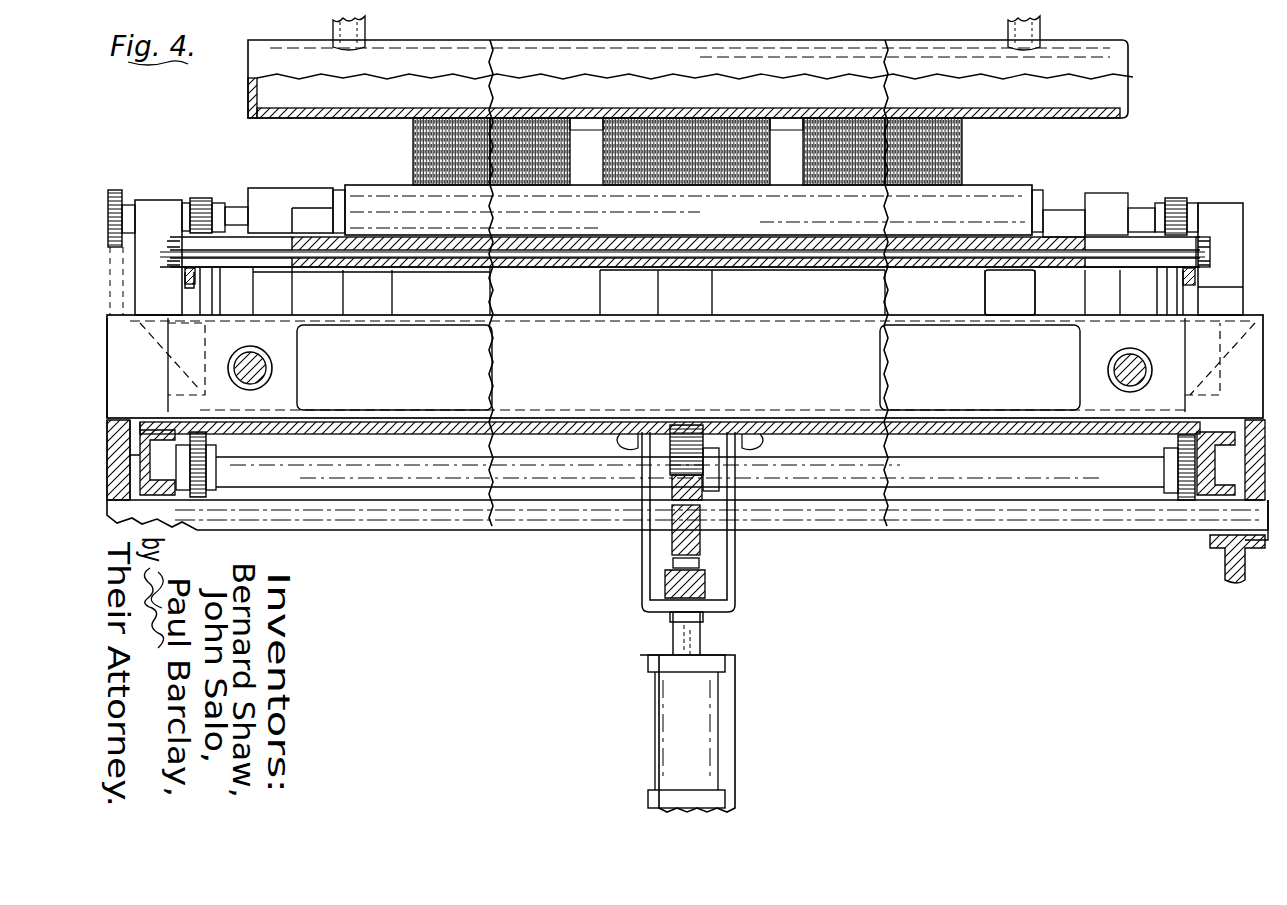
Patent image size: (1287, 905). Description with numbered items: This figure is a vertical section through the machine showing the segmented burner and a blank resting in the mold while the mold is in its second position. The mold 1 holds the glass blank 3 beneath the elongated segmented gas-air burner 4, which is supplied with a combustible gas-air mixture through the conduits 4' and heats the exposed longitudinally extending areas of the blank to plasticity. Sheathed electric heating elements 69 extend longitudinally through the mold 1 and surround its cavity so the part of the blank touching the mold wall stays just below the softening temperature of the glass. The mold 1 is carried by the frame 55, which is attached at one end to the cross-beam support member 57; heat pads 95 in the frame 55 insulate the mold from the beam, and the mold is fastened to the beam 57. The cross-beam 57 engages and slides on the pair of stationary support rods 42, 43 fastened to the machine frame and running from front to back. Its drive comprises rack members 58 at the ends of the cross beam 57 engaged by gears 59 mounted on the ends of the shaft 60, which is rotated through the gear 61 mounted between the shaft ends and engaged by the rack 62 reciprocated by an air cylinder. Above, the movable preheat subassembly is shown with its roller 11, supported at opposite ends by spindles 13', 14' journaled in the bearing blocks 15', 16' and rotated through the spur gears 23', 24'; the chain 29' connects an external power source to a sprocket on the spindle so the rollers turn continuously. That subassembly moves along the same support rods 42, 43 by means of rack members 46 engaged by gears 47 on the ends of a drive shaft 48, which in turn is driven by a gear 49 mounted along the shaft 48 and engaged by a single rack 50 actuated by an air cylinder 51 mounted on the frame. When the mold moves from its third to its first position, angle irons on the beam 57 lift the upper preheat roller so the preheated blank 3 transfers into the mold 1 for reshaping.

The mold 1 is at (1061, 210).
The blank 3 is at (988, 185).
The segmented gas-air burner 4 is at (705, 79).
The conduits 4' is at (686, 33).
The roller 11 is at (1100, 193).
The spindle 13' is at (237, 198).
The spindle 14' is at (1148, 200).
The bearing block 15' is at (158, 242).
The bearing block 16' is at (1228, 238).
The spur gear 23' is at (203, 196).
The spur gear 24' is at (1182, 198).
The chain 29' is at (132, 233).
The support rod 42 is at (267, 368).
The support rod 43 is at (1108, 370).
The rack member 46 is at (180, 392).
The gear 47 is at (211, 445).
The drive shaft 48 is at (938, 457).
The gear 49 is at (640, 441).
The rack 50 is at (672, 618).
The air cylinder 51 is at (720, 744).
The frame 55 is at (1120, 280).
The cross-beam support member 57 is at (1250, 316).
The rack member 58 is at (1258, 424).
The gear 59 is at (1245, 564).
The shaft 60 is at (984, 530).
The gear 61 is at (670, 536).
The rack 62 is at (670, 578).
The sheathed electric heating element 69 is at (1205, 260).
The heat pad 95 is at (1030, 297).